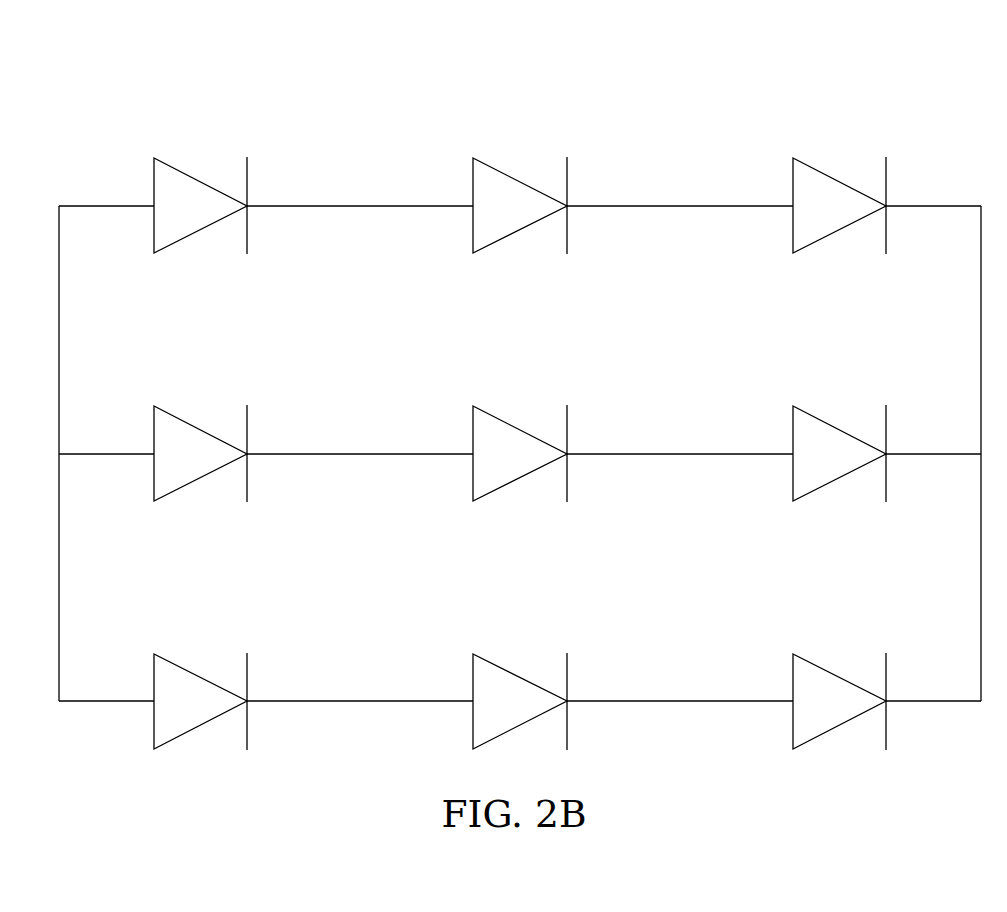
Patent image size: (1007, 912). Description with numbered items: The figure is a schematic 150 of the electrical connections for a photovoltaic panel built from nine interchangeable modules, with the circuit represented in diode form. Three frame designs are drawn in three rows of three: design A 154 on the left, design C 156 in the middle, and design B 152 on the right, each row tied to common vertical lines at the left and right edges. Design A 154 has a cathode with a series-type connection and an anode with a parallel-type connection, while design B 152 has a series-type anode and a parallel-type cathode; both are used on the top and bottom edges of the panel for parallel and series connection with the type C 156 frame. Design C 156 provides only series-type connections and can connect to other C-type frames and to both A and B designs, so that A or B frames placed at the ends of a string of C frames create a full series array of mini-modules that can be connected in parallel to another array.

The schematic 150 is at (520, 390).
The electrical connection design B 152 is at (820, 170).
The electrical connection design A 154 is at (180, 170).
The electrical connection design C 156 is at (500, 170).